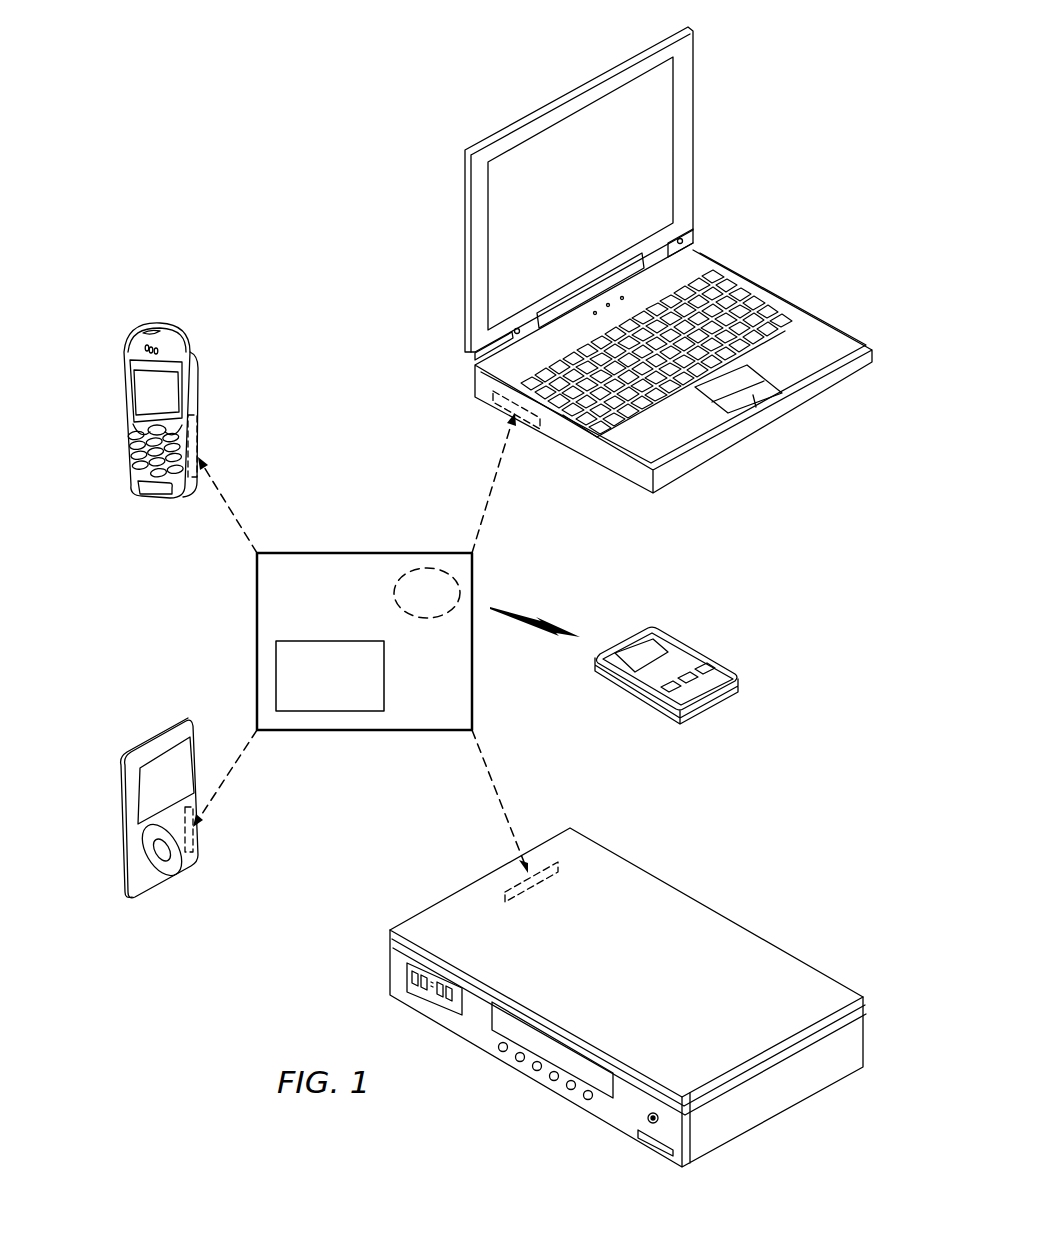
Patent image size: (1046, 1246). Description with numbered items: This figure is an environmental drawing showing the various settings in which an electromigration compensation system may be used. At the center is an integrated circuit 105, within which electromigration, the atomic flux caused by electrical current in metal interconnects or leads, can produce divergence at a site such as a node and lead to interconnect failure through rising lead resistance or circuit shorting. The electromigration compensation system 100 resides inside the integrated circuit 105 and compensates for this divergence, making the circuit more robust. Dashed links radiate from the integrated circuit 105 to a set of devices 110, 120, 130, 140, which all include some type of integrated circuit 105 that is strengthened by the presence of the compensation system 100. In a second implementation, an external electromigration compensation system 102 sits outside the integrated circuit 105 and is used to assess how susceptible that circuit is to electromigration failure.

The electromigration compensation system 100 is at (318, 640).
The external electromigration compensation system 102 is at (690, 647).
The integrated circuit 105 is at (353, 552).
The device 110 is at (157, 321).
The device 120 is at (692, 143).
The device 130 is at (776, 1116).
The device 140 is at (137, 902).